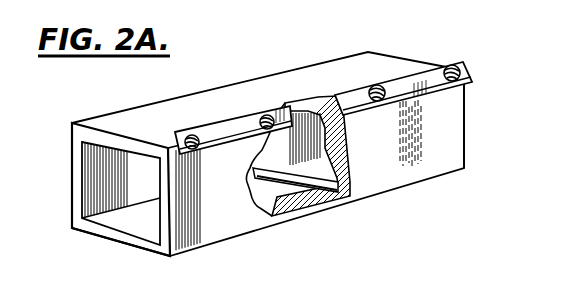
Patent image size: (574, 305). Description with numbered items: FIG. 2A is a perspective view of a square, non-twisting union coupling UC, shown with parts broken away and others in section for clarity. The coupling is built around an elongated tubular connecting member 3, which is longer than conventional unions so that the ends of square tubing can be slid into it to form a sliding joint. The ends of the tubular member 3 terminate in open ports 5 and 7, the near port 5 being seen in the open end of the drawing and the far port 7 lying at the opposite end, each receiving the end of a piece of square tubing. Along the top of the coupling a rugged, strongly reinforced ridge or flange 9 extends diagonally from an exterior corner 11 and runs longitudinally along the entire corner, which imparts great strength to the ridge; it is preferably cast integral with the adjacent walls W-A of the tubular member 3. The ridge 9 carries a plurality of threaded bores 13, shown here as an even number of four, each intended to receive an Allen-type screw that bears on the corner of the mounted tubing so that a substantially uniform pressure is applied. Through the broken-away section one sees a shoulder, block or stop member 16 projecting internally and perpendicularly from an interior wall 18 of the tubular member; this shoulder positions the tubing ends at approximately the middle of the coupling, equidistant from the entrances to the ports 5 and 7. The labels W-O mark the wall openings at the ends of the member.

The elongated tubular connecting member 3 is at (298, 82).
The open port 5 is at (118, 226).
The open port 7 is at (459, 129).
The reinforced ridge or flange 9 is at (186, 136).
The exterior corner 11 is at (155, 167).
The threaded bore 13 is at (260, 120).
The shoulder, block or stop member 16 is at (257, 174).
The interior wall 18 is at (342, 153).
The union coupling UC is at (380, 53).
The adjacent walls W-A is at (295, 183).
The weld opening W-O is at (72, 186).